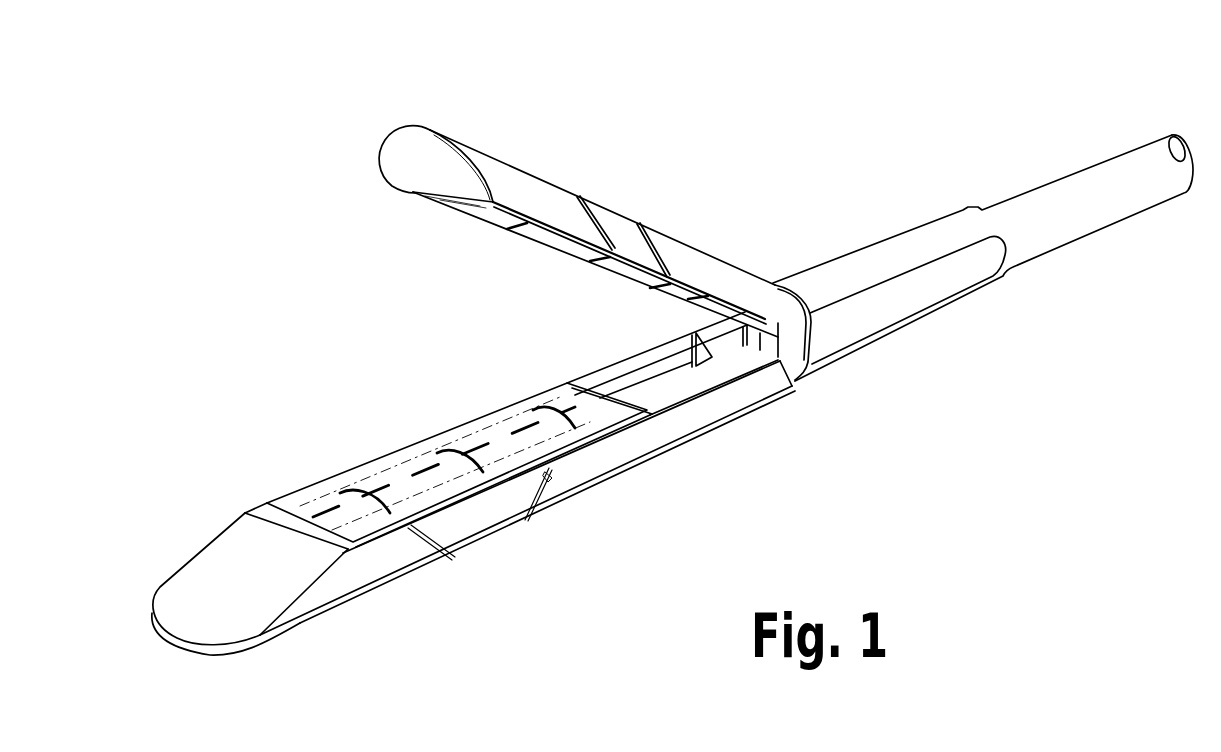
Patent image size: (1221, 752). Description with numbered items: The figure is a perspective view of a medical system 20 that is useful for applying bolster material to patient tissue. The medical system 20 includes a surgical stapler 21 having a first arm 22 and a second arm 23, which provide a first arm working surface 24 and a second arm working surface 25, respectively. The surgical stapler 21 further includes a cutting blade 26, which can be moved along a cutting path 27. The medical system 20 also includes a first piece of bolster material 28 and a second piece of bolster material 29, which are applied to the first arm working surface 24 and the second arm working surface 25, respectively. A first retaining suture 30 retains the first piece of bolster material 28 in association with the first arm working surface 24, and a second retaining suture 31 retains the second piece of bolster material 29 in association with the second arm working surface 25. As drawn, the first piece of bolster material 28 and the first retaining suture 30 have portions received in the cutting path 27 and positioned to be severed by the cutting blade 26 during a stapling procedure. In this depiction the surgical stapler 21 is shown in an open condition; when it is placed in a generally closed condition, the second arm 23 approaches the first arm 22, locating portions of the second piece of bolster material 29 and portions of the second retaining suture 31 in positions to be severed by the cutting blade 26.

The medical system 20 is at (148, 217).
The surgical stapler 21 is at (892, 237).
The first arm 22 is at (176, 573).
The second arm 23 is at (431, 128).
The first arm working surface 24 is at (262, 513).
The second arm working surface 25 is at (412, 190).
The cutting blade 26 is at (715, 357).
The cutting path 27 is at (640, 390).
The first piece of bolster material 28 is at (382, 470).
The second piece of bolster material 29 is at (490, 213).
The first retaining suture 30 is at (456, 455).
The second retaining suture 31 is at (658, 253).